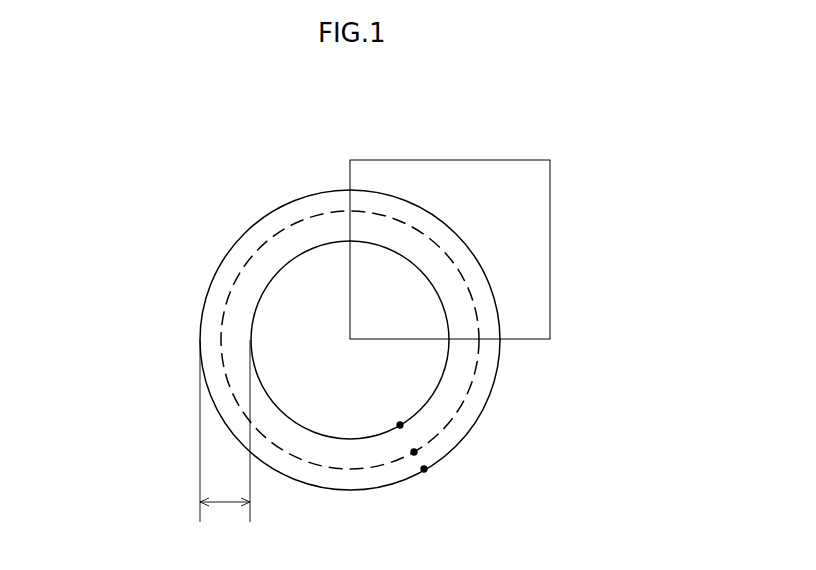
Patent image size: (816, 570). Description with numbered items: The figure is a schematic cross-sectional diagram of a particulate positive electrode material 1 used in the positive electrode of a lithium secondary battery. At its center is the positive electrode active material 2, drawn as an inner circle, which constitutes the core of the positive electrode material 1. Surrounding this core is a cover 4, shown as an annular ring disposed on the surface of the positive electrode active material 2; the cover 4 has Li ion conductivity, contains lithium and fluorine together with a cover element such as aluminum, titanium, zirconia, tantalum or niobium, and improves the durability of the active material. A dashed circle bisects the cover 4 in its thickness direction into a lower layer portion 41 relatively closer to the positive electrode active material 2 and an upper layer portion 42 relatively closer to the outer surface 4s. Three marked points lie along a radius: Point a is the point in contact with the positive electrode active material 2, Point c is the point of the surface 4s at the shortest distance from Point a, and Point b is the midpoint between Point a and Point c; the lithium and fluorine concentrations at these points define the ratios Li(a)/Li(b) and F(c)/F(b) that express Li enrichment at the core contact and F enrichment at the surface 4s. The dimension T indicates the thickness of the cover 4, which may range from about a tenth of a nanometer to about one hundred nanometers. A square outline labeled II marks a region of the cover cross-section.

The positive electrode material 1 is at (167, 152).
The positive electrode active material 2 is at (345, 412).
The cover 4 is at (118, 278).
The lower layer portion 41 is at (238, 293).
The upper layer portion 42 is at (212, 325).
The surface 4s is at (230, 250).
The Point a is at (400, 425).
The Point b is at (414, 452).
The Point c is at (424, 469).
The thickness T is at (225, 436).
The enlarged region of FIG. 2 II is at (550, 193).